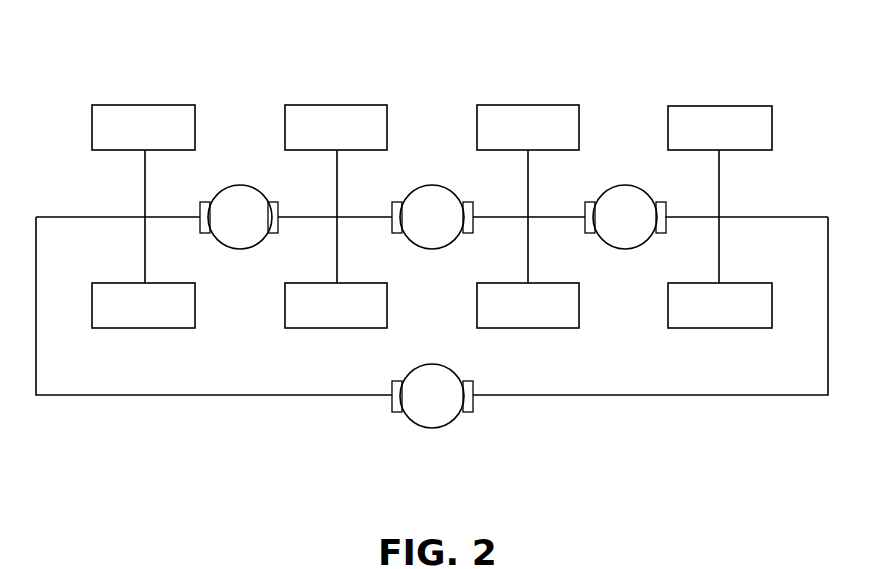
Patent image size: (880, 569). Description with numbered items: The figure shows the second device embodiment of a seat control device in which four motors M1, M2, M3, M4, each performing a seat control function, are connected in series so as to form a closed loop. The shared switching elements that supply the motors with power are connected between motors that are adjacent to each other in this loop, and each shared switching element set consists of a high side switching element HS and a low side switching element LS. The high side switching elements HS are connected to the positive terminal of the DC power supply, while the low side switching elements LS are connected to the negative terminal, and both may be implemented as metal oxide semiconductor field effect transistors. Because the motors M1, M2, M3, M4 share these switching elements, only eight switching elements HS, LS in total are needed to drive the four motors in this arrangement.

The high side switching element HS is at (130, 104).
The low side switching element LS is at (137, 329).
The motor M1 is at (239, 217).
The motor M2 is at (432, 217).
The motor M3 is at (625, 217).
The motor M4 is at (432, 396).